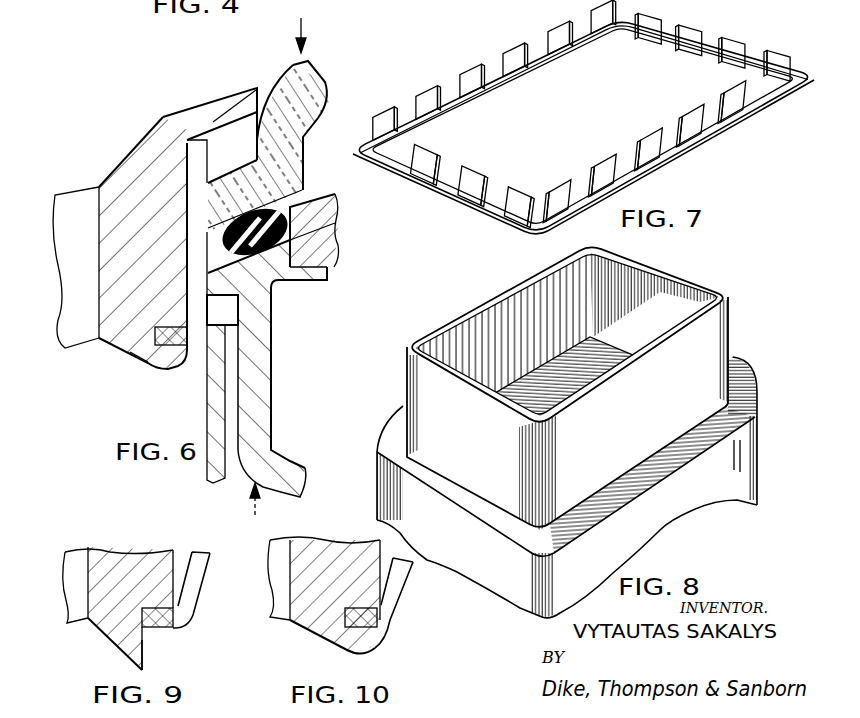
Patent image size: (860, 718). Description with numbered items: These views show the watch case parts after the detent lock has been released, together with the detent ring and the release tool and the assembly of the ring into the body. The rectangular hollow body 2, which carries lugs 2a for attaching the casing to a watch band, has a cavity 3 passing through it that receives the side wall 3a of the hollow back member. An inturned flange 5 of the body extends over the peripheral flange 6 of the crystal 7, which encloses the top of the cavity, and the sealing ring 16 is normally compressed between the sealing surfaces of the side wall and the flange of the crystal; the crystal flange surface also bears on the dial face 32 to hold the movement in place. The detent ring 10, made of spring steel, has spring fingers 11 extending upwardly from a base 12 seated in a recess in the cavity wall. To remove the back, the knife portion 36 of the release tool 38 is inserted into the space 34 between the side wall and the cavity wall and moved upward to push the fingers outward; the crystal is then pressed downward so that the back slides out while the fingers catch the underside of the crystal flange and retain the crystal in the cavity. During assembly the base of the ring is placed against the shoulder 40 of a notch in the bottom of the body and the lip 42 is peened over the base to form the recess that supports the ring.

In FIG. 6, the hollow body 2 is at (113, 161).
In FIG. 9, the hollow body 2 is at (105, 533).
In FIG. 10, the hollow body 2 is at (341, 515).
In FIG. 6, the lugs 2a is at (73, 281).
In FIG. 9, the lugs 2a is at (77, 595).
In FIG. 10, the lugs 2a is at (280, 617).
In FIG. 6, the cavity 3 is at (198, 140).
In FIG. 6, the side wall 3a is at (262, 362).
In FIG. 6, the inturned flange 5 is at (233, 100).
In FIG. 6, the peripheral flange 6 is at (230, 182).
In FIG. 6, the crystal 7 is at (308, 90).
In FIG. 7, the detent ring 10 is at (692, 174).
In FIG. 6, the spring fingers 11 is at (130, 353).
In FIG. 7, the spring fingers 11 is at (653, 143).
In FIG. 6, the base 12 is at (157, 345).
In FIG. 7, the base 12 is at (736, 128).
In FIG. 9, the base 12 is at (143, 620).
In FIG. 10, the base 12 is at (347, 633).
In FIG. 6, the sealing ring 16 is at (267, 208).
In FIG. 6, the dial face 32 is at (335, 228).
In FIG. 6, the space 34 is at (233, 320).
In FIG. 6, the knife portion 36 is at (217, 422).
In FIG. 8, the knife portion 36 is at (668, 287).
In FIG. 8, the release tool 38 is at (799, 425).
In FIG. 9, the shoulder 40 is at (165, 605).
In FIG. 9, the lip 42 is at (132, 653).
In FIG. 10, the lip 42 is at (368, 633).